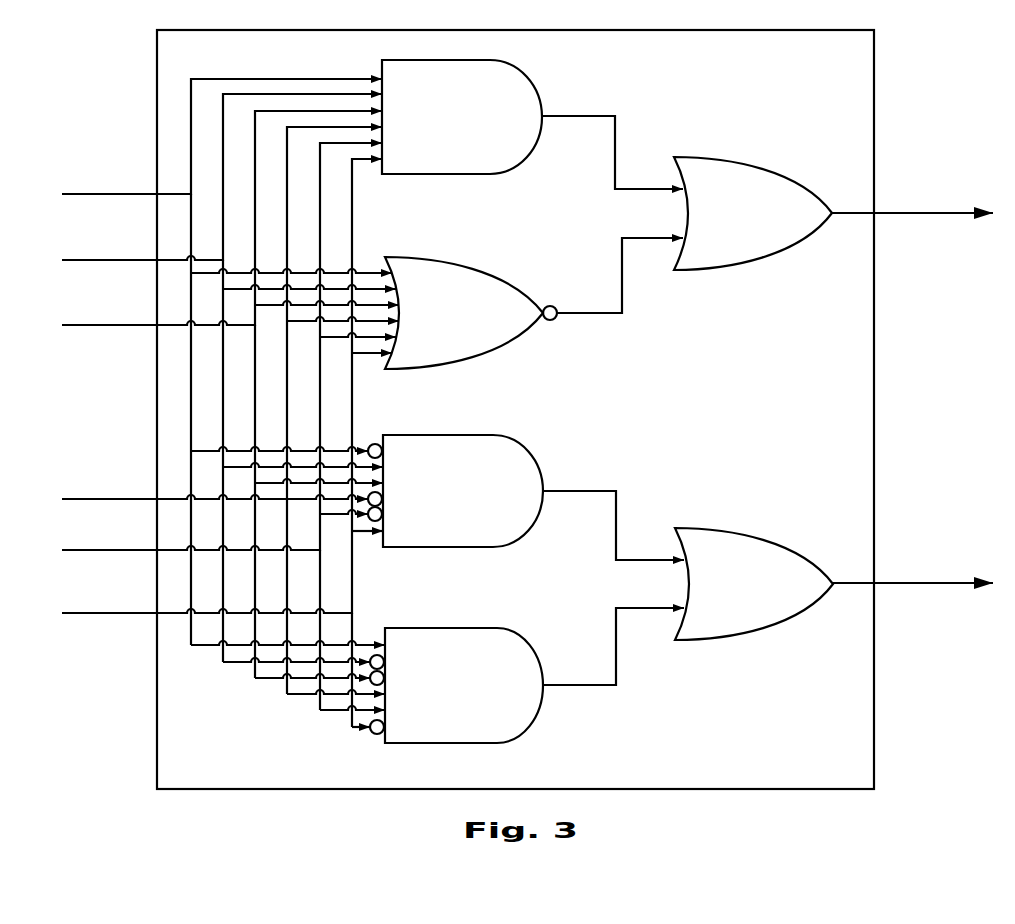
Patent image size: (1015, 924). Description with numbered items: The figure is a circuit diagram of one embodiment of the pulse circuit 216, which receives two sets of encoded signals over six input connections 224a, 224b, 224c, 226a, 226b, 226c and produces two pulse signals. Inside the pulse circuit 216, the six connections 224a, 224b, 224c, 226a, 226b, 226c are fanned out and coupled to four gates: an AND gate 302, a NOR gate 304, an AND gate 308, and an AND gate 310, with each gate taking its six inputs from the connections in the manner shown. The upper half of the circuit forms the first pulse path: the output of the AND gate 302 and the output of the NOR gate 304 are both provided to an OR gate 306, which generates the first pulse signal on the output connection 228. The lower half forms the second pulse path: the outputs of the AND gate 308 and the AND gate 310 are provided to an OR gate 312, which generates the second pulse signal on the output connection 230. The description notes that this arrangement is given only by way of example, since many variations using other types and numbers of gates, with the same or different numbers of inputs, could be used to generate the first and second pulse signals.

The pulse circuit 216 is at (875, 723).
The connection 224a is at (113, 193).
The connection 224b is at (117, 259).
The connection 224c is at (105, 324).
The connection 226a is at (114, 499).
The connection 226b is at (102, 550).
The connection 226c is at (128, 613).
The AND gate 302 is at (423, 175).
The NOR gate 304 is at (420, 370).
The OR gate 306 is at (718, 268).
The AND gate 308 is at (422, 548).
The AND gate 310 is at (423, 744).
The OR gate 312 is at (708, 638).
The connection 228 is at (930, 211).
The connection 230 is at (924, 581).